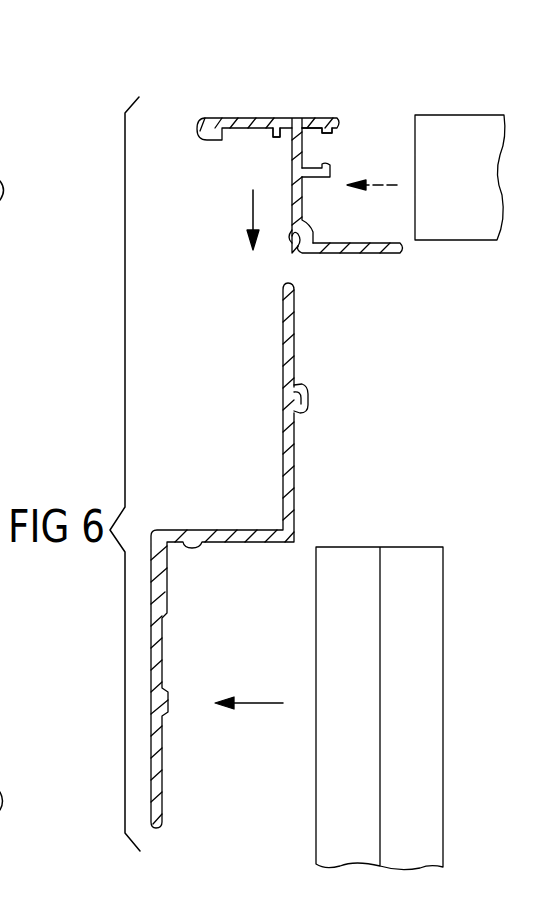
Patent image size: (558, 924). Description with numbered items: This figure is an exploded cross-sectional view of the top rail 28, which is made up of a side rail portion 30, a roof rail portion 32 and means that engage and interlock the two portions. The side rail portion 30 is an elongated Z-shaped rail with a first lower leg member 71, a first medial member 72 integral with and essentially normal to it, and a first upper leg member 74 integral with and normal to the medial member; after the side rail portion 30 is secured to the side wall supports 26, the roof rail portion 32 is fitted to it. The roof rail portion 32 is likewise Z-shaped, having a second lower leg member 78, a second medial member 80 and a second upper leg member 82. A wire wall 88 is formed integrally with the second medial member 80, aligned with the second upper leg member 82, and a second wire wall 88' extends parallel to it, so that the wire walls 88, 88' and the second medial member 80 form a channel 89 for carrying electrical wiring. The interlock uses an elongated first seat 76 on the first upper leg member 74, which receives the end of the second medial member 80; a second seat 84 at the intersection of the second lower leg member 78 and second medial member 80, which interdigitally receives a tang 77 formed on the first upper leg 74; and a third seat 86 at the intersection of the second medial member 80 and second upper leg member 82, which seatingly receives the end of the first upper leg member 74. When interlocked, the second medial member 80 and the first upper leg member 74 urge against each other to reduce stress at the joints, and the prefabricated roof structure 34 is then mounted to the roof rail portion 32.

The side wall supports 26 is at (405, 547).
The top rail 28 is at (266, 64).
The side rail portion 30 is at (297, 455).
The roof rail portion 32 is at (206, 118).
The roof structure 34 is at (478, 115).
The first lower leg member 71 is at (162, 635).
The first medial member 72 is at (218, 530).
The first upper leg member 74 is at (297, 313).
The first seat 76 is at (300, 392).
The tang 77 is at (308, 394).
The second lower leg member 78 is at (380, 253).
The second medial member 80 is at (290, 178).
The second upper leg member 82 is at (270, 118).
The second seat 84 is at (293, 246).
The third seat 86 is at (290, 137).
The wire wall 88 is at (349, 98).
The second wire wall 88' is at (357, 159).
The channel 89 is at (313, 143).